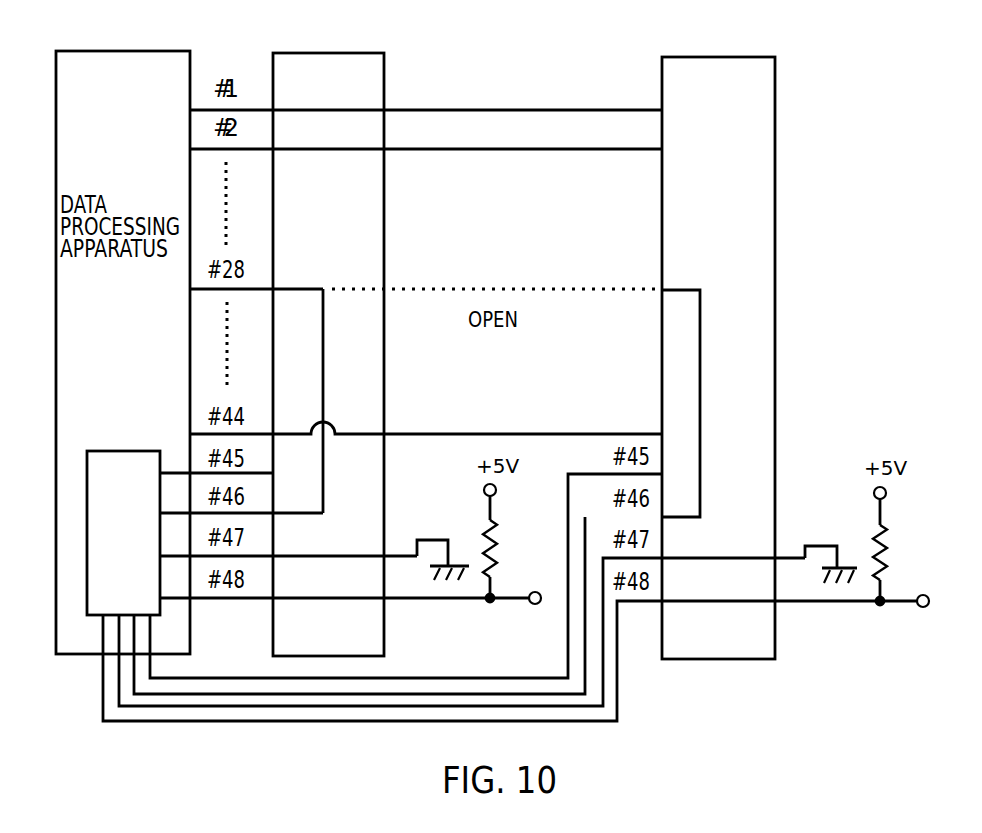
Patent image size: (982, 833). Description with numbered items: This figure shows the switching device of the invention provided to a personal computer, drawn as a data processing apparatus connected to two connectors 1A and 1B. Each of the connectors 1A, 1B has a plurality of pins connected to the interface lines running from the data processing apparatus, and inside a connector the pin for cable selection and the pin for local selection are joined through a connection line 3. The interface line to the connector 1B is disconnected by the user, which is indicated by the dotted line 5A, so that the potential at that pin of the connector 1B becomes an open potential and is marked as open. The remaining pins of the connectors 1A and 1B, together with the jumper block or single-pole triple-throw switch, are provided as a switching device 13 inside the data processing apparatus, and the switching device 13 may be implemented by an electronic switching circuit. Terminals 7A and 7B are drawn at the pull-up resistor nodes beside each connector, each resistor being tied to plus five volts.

The connector 1A is at (335, 58).
The connector 1B is at (722, 62).
The connection line 3 is at (700, 360).
The dotted line 5A is at (503, 288).
The first detection terminal 7A is at (538, 592).
The second detection terminal 7B is at (927, 594).
The switching device 13 is at (135, 537).